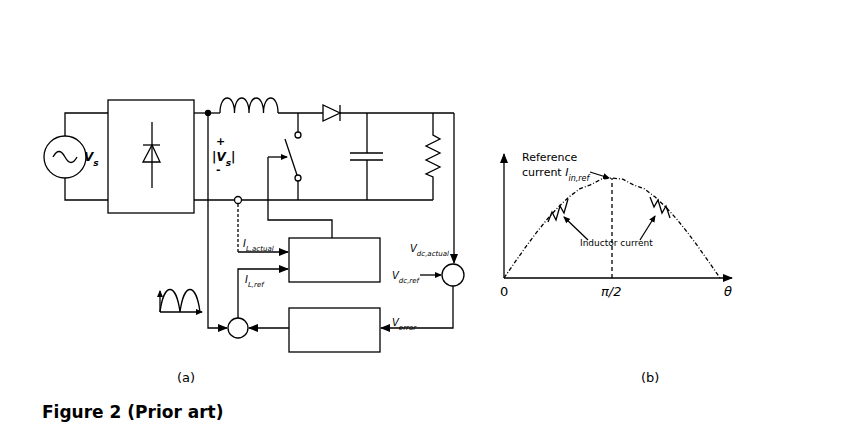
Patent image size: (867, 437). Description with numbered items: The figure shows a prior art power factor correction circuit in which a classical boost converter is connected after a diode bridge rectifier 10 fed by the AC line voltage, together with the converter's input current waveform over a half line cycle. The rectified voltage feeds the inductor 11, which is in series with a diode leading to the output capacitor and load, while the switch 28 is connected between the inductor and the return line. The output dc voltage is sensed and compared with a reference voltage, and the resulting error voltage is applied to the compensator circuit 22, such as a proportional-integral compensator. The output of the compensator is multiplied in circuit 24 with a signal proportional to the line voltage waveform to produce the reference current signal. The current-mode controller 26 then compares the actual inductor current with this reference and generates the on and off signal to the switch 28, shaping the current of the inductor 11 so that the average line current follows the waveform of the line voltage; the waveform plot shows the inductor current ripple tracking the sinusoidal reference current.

The rectifier 10 is at (152, 98).
The inductor 11 is at (255, 96).
The switch 28 is at (300, 150).
The current-mode controller 26 is at (372, 287).
The compensator circuit 22 is at (462, 289).
The multiplier circuit 24 is at (240, 339).